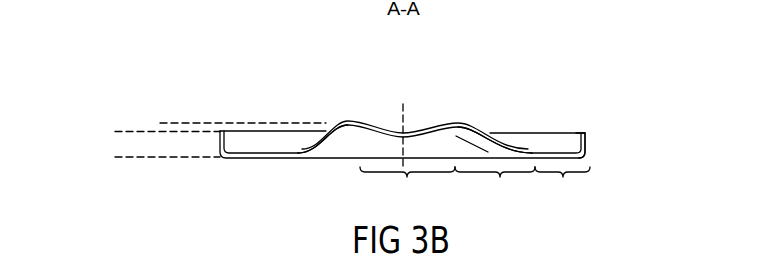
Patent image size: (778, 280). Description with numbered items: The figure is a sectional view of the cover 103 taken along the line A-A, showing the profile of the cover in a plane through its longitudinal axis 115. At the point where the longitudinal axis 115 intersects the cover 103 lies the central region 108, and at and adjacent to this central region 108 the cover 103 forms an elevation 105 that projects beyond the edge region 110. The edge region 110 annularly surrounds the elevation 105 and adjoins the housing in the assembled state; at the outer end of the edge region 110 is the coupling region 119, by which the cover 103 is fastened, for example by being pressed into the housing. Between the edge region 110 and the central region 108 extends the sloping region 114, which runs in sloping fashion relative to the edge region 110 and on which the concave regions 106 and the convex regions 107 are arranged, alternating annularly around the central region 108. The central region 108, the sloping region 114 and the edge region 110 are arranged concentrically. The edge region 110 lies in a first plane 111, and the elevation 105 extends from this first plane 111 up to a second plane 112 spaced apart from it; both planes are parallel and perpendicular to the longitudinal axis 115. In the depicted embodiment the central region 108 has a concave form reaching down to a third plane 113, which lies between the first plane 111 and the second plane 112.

The cover 103 is at (590, 72).
The elevation 105 is at (360, 116).
The concave region 106 is at (315, 123).
The convex region 107 is at (492, 128).
The central region 108 is at (407, 187).
The edge region 110 is at (562, 187).
The first plane 111 is at (125, 157).
The second plane 112 is at (172, 122).
The third plane 113 is at (123, 131).
The sloping region 114 is at (495, 187).
The longitudinal axis 115 is at (411, 124).
The coupling region 119 is at (586, 137).